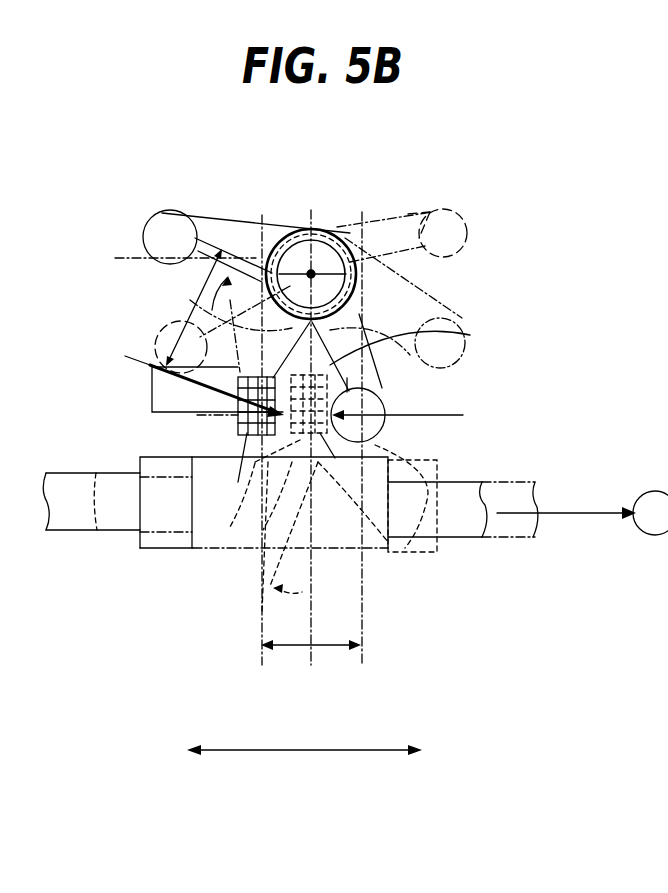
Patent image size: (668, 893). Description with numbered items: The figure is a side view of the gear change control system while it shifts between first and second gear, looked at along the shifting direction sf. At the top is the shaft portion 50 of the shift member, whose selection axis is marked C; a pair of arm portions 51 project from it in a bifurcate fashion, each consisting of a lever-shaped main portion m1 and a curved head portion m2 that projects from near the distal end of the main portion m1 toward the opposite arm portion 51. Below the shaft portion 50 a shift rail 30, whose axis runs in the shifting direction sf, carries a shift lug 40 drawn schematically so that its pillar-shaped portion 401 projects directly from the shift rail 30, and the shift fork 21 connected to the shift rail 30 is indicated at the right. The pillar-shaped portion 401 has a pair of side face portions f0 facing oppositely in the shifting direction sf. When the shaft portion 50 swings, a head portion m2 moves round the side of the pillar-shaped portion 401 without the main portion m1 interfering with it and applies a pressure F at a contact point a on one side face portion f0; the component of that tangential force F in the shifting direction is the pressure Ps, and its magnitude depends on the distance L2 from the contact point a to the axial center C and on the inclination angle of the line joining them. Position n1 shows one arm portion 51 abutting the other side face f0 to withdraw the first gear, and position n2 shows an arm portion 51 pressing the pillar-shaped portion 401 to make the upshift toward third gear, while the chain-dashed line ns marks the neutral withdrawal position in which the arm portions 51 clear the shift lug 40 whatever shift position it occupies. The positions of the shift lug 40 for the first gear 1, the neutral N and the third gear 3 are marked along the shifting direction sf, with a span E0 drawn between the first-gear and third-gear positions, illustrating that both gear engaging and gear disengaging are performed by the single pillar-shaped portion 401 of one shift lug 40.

The shaft portion 50 is at (357, 257).
The selection axis C is at (330, 272).
The arm portion 51 is at (235, 214).
The head portion m2 is at (157, 226).
The distance L2 is at (160, 337).
The pillar-shaped portion 401 is at (456, 341).
The main portion m1 is at (348, 327).
The neutral position line ns is at (436, 303).
The pressure F is at (188, 382).
The arm portion position n1 is at (193, 411).
The arm portion position n2 is at (200, 459).
The component force Ps is at (417, 415).
The shift lug 40 is at (389, 551).
The shift rail 30 is at (72, 503).
The shift fork 21 is at (528, 509).
The side face portion f0 is at (253, 440).
The contact point a is at (285, 441).
The automatic transmission 1 is at (306, 666).
The neutral N is at (308, 681).
The position 3 is at (358, 681).
The displacement range E0 is at (288, 648).
The shifting direction sf is at (322, 752).